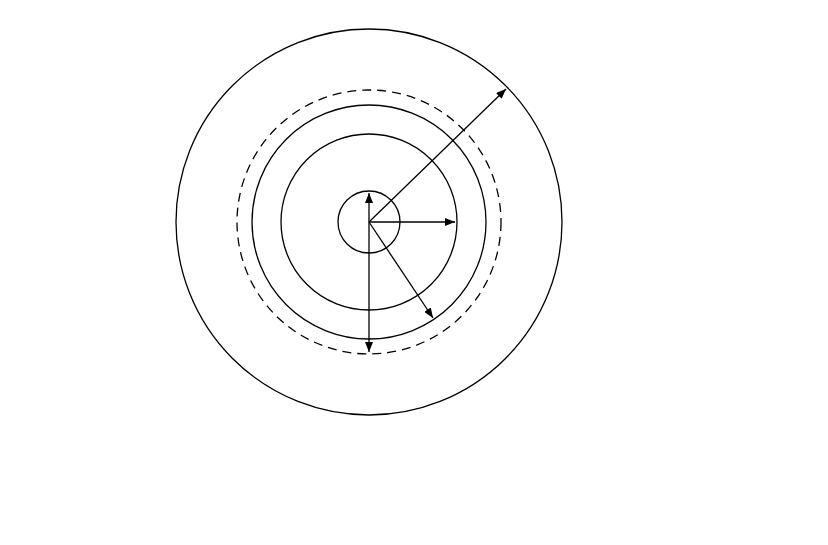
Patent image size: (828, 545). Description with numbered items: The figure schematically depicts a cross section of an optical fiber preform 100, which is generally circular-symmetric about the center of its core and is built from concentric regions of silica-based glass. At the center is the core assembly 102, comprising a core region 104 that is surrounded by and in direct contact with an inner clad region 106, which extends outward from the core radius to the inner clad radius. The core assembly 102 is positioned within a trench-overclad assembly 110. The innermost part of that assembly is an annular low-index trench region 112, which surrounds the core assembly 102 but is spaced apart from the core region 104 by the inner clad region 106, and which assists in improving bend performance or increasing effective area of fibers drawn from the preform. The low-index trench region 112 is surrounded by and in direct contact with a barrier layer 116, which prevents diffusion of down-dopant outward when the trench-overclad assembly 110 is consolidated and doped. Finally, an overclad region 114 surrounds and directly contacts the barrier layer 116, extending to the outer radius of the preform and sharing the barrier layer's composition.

The optical fiber preform 100 is at (214, 100).
The core assembly 102 is at (115, 238).
The core region 104 is at (342, 238).
The inner clad region 106 is at (299, 278).
The trench-overclad assembly 110 is at (592, 200).
The low-index trench region 112 is at (482, 184).
The barrier layer 116 is at (500, 197).
The overclad region 114 is at (562, 196).